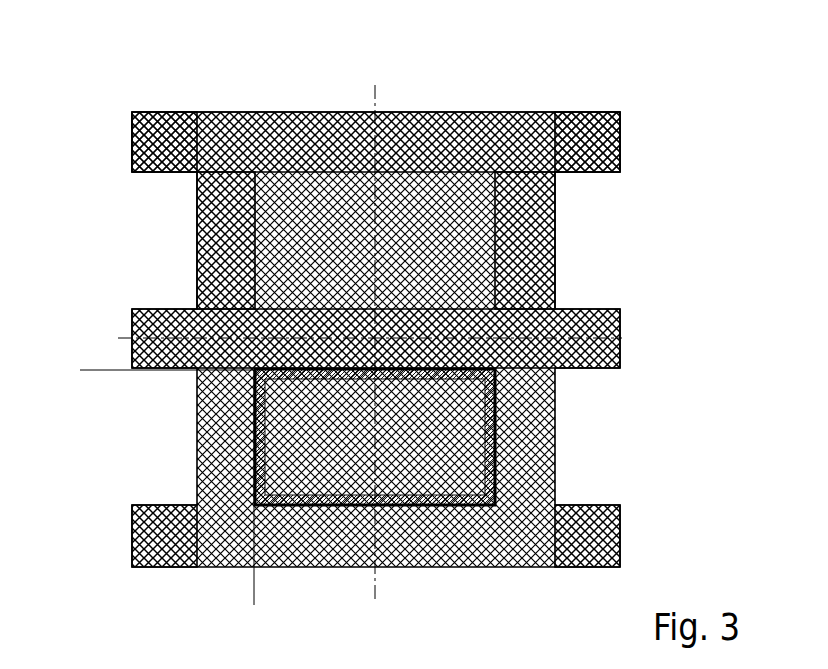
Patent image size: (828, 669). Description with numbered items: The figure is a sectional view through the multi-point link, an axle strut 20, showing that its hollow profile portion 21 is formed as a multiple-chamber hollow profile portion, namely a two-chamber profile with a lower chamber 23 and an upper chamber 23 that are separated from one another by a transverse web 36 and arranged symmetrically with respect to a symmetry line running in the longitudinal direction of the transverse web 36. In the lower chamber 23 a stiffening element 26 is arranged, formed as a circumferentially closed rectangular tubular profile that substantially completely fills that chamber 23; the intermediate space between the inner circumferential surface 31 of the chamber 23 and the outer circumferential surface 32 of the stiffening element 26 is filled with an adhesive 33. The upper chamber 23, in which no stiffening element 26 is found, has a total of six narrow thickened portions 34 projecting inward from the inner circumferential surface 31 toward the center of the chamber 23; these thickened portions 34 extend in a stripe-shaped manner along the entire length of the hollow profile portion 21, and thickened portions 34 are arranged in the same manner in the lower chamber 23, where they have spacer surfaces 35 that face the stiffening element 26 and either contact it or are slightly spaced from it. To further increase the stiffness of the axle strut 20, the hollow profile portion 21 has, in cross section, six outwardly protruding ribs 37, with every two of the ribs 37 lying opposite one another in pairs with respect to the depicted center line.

The axle strut 20 is at (641, 106).
The hollow profile portion 21 is at (411, 108).
The chamber 23 is at (352, 277).
The stiffening element 26 is at (497, 412).
The inner circumferential surface 31 is at (396, 304).
The outer circumferential surface 32 is at (91, 368).
The adhesive 33 is at (492, 475).
The narrow thickened portions 34 is at (418, 183).
The spacer surfaces 35 is at (426, 304).
The transverse web 36 is at (320, 325).
The outwardly protruding ribs 37 is at (155, 150).